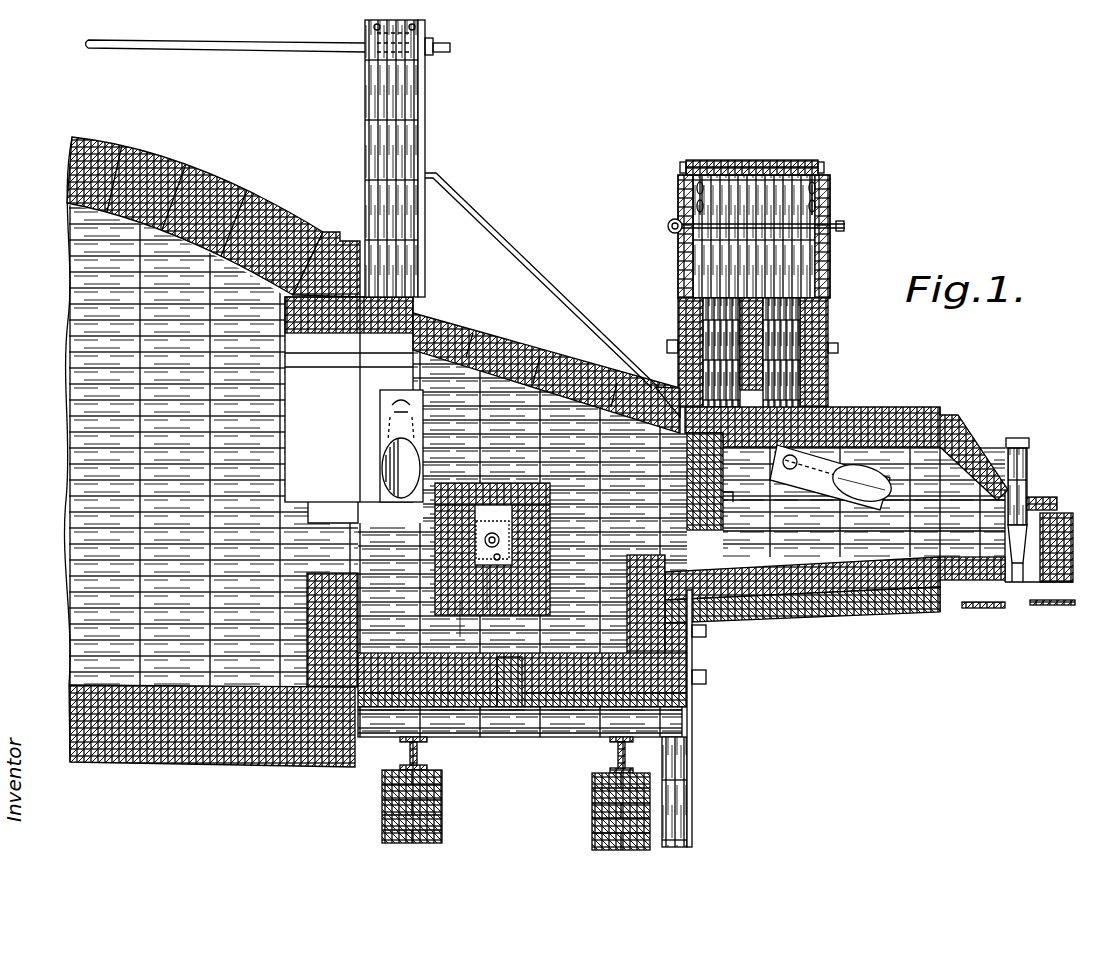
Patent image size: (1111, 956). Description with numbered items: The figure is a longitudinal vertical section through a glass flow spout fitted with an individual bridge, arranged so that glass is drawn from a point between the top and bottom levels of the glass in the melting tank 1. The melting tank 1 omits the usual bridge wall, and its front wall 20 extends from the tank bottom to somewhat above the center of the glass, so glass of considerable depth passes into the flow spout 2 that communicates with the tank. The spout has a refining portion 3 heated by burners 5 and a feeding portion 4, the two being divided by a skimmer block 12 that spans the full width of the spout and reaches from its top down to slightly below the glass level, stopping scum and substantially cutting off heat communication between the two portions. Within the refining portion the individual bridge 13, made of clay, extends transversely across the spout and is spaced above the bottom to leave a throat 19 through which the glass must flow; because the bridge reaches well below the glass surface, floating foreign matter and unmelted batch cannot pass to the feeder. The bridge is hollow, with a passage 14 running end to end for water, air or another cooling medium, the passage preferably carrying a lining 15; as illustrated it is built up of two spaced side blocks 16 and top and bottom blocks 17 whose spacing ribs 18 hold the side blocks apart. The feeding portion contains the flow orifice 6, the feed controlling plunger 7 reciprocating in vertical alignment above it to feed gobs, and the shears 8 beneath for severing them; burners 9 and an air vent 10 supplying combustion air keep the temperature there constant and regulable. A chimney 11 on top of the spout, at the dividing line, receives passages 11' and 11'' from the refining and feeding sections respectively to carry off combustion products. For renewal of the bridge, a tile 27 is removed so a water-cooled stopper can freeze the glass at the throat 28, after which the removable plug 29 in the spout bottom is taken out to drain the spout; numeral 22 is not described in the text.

The melting tank 1 is at (228, 190).
The flow spout 2 is at (848, 417).
The refining portion 3 is at (378, 446).
The feeding portion 4 is at (864, 504).
The burners 5 is at (428, 404).
The flow orifice 6 is at (1017, 588).
The feed controlling plunger 7 is at (1027, 472).
The shears 8 is at (1047, 606).
The burners 9 is at (865, 465).
The air vent 10 is at (733, 497).
The chimney 11 is at (767, 283).
The passage 11' is at (654, 363).
The passage 11'' is at (823, 371).
The skimmer block 12 is at (683, 460).
The individual bridge 13 is at (497, 522).
The passage 14 is at (500, 530).
The lining 15 is at (487, 567).
The side blocks 16 is at (410, 650).
The top and bottom blocks 17 is at (530, 600).
The spacing ribs 18 is at (480, 530).
The throat 19 is at (465, 637).
The front wall 20 is at (313, 605).
The valve stem 22 is at (485, 532).
The tile 27 is at (507, 350).
The throat 28 is at (330, 550).
The removable plug 29 is at (517, 717).